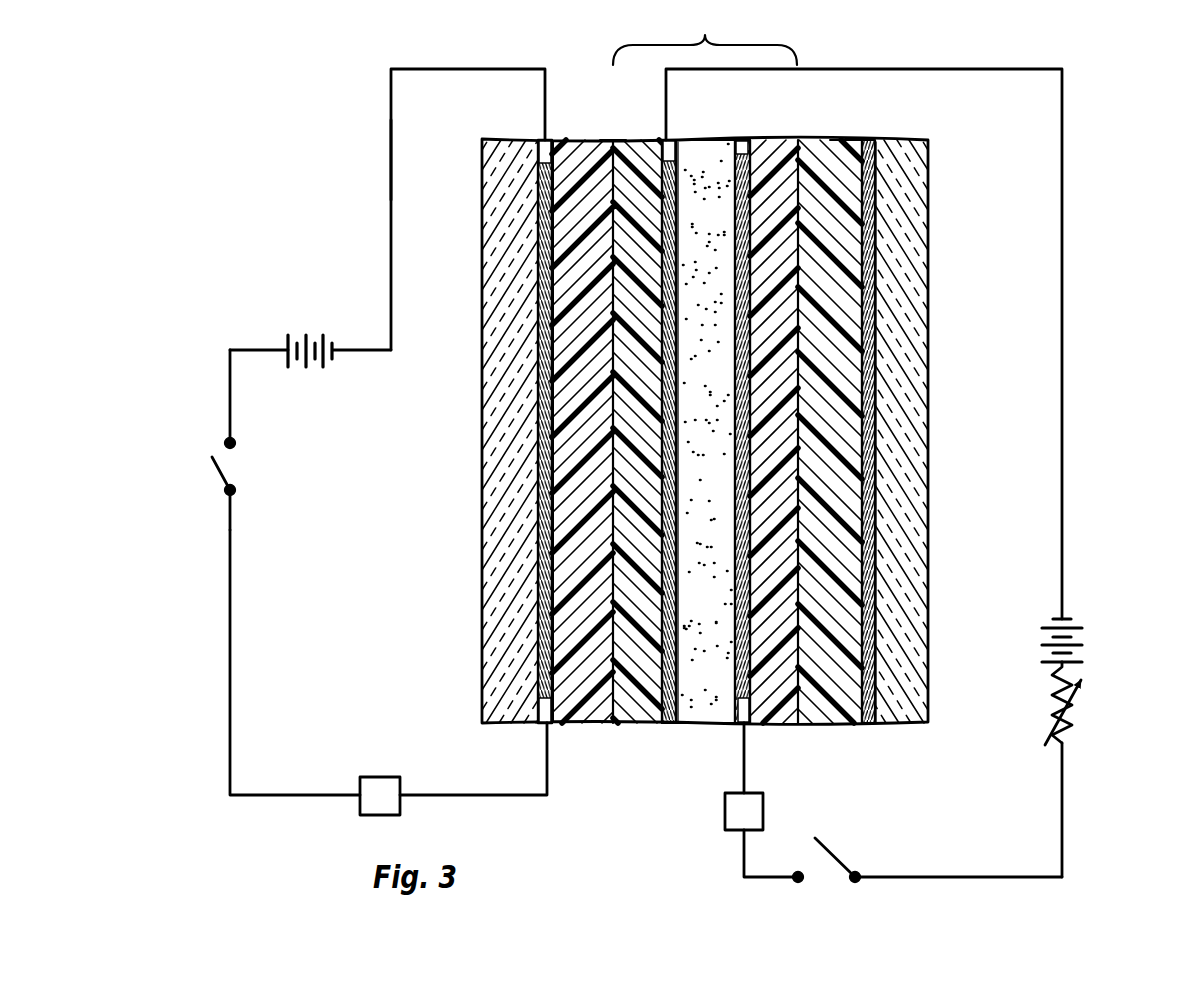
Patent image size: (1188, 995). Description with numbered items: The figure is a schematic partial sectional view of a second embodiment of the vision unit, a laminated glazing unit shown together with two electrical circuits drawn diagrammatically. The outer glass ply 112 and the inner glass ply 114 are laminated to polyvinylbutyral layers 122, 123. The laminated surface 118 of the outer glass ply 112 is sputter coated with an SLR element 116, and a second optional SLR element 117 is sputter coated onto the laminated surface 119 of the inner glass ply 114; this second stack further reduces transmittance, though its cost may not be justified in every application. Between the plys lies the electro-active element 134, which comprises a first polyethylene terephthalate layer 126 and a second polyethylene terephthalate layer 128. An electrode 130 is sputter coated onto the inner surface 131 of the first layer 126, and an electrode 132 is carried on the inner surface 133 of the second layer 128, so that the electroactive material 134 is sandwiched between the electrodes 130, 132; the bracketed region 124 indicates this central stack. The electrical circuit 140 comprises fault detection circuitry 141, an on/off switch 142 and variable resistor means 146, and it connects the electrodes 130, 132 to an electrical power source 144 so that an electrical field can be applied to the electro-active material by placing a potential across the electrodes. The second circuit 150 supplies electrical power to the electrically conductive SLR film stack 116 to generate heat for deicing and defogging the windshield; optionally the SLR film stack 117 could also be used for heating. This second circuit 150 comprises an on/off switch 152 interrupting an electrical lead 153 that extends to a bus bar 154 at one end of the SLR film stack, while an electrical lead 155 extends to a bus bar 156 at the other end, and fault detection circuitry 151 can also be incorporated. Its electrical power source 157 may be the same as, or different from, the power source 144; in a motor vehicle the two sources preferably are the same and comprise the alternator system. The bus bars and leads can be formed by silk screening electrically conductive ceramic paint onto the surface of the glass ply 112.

The outer glass ply 112 is at (498, 598).
The inner glass ply 114 is at (907, 402).
The SLR element 116 is at (554, 160).
The second SLR element 117 is at (861, 152).
The laminated surface 118 is at (547, 230).
The laminated surface 119 is at (895, 152).
The polyvinylbutyral layer 122 is at (613, 140).
The polyvinylbutyral layer 123 is at (845, 152).
The electrochromic cell stack 124 is at (705, 38).
The first polyethylene terephthalate layer 126 is at (638, 712).
The second polyethylene terephthalate layer 128 is at (767, 712).
The electrode 130 is at (680, 712).
The inner surface 131 is at (666, 715).
The electrode 132 is at (735, 150).
The inner surface 133 is at (745, 150).
The electro-active element 134 is at (690, 152).
The electrical circuit 140 is at (1072, 582).
The fault detection circuitry 141 is at (725, 812).
The on/off switch 142 is at (835, 838).
The electrical power source 144 is at (1080, 654).
The variable resistor means 146 is at (1073, 718).
The second circuit 150 is at (383, 251).
The fault detection circuitry 151 is at (380, 777).
The on/off switch 152 is at (222, 492).
The electrical lead 153 is at (227, 680).
The bus bar 154 is at (545, 712).
The electrical lead 155 is at (391, 140).
The bus bar 156 is at (546, 152).
The electrical power source 157 is at (310, 336).